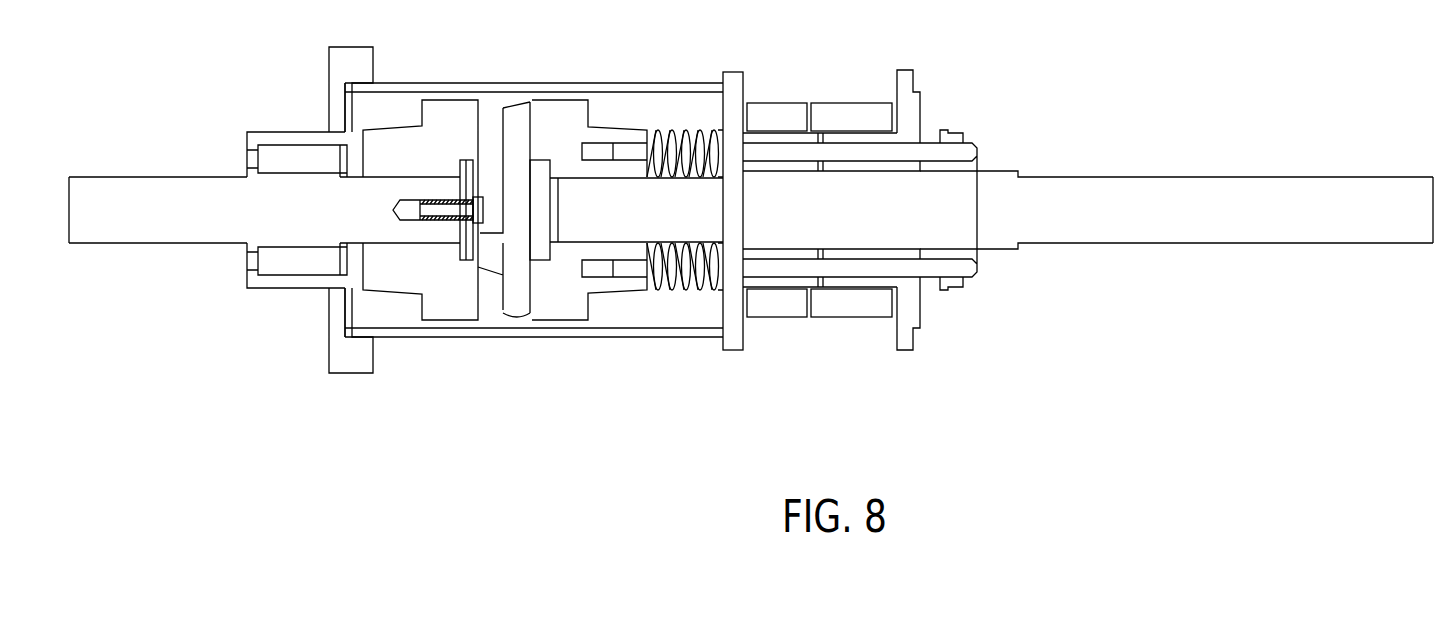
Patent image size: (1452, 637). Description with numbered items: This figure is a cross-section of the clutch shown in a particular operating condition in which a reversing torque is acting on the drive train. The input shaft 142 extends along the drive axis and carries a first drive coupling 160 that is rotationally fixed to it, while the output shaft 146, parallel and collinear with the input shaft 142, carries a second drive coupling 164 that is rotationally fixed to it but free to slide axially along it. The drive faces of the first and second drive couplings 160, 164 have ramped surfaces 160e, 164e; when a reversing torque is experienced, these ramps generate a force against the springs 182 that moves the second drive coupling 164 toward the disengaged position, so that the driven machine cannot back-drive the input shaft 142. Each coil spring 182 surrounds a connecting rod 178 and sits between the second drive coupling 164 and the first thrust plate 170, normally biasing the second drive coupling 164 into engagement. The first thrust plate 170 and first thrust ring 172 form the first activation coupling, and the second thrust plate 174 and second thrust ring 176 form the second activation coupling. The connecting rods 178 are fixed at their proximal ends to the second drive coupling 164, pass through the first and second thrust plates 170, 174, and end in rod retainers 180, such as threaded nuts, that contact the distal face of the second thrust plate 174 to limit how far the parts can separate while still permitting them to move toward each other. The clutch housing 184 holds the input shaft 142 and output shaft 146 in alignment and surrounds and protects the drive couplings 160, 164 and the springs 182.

The input shaft 142 is at (202, 197).
The output shaft 146 is at (1140, 192).
The first drive coupling 160 is at (438, 118).
The ramped surface 160e is at (523, 170).
The second drive coupling 164 is at (578, 120).
The ramped surface 164e is at (520, 163).
The first thrust plate 170 is at (732, 345).
The first thrust ring 172 is at (778, 310).
The second thrust plate 174 is at (905, 340).
The second thrust ring 176 is at (850, 312).
The connecting rod 178 is at (908, 148).
The rod retainer 180 is at (945, 288).
The spring 182 is at (675, 130).
The clutch housing 184 is at (445, 333).